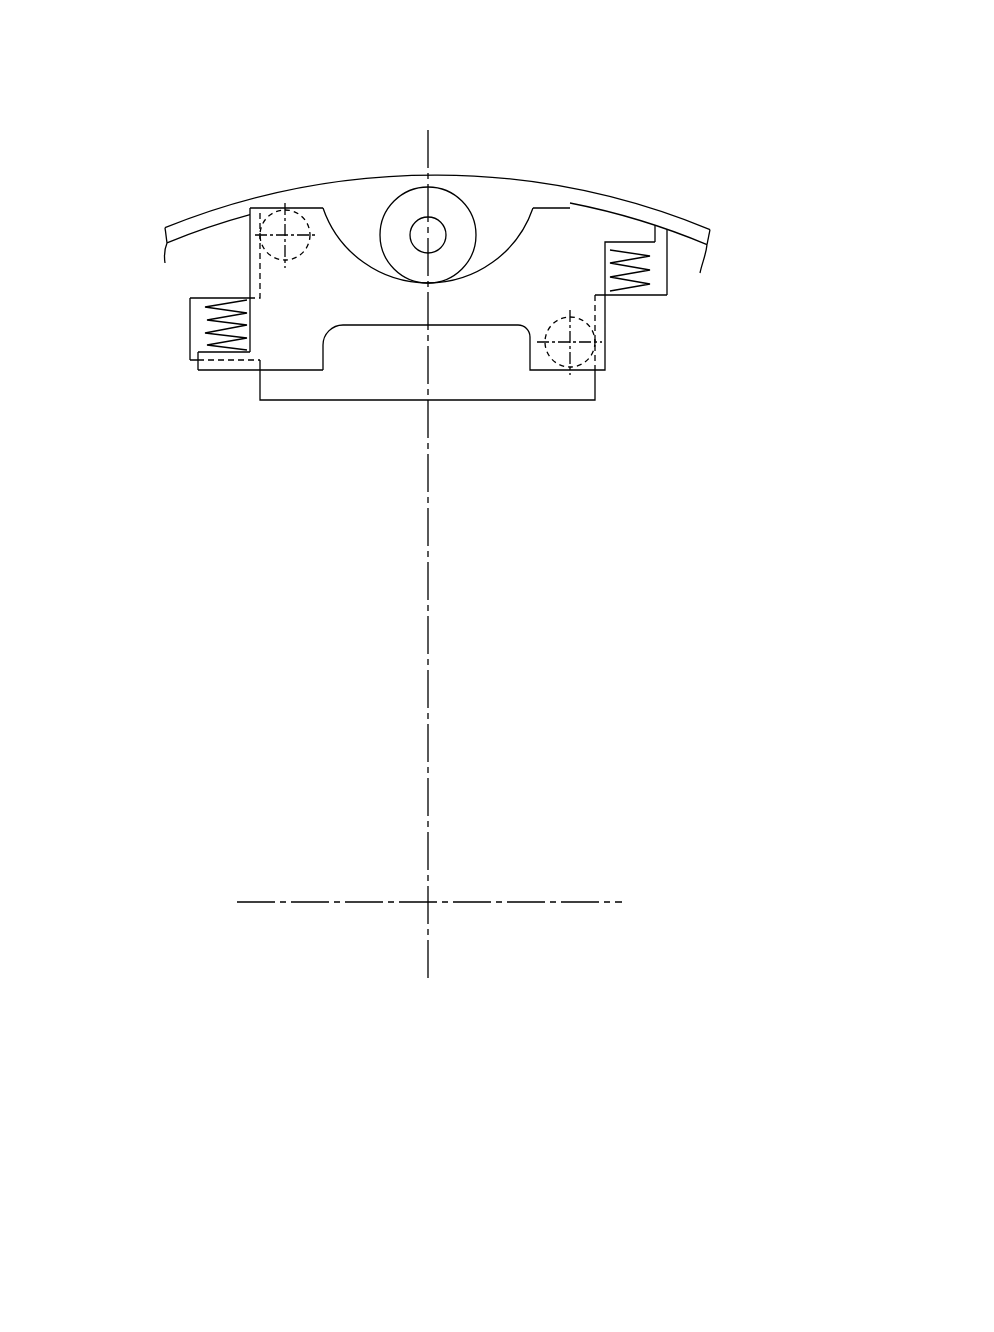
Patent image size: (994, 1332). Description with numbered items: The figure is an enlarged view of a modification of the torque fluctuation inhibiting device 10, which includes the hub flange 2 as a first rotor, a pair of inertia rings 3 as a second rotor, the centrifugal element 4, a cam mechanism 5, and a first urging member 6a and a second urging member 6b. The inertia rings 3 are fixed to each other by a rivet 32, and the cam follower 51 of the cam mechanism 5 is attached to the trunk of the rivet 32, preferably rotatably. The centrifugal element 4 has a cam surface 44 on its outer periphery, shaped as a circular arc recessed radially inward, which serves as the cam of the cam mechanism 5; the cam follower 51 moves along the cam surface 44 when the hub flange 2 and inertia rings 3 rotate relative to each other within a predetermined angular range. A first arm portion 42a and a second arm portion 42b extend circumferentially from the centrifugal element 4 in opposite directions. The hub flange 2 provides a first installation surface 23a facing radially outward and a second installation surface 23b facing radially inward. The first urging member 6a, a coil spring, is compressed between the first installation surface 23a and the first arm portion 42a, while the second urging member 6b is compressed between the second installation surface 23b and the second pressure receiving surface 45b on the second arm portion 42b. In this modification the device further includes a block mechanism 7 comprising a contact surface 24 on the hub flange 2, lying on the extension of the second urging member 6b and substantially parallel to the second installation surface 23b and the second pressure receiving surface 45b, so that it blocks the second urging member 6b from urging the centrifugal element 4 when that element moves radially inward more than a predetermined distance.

The torque fluctuation inhibiting device 10 is at (658, 103).
The hub flange 2 is at (690, 236).
The inertia ring 3 is at (523, 180).
The centrifugal element 4 is at (570, 205).
The cam mechanism 5 is at (373, 257).
The cam follower 51 is at (392, 203).
The rivet 32 is at (440, 228).
The cam surface 44 is at (515, 241).
The first arm portion 42a is at (632, 228).
The second arm portion 42b is at (213, 370).
The first installation surface 23a is at (660, 283).
The second installation surface 23b is at (190, 312).
The first urging member 6a is at (633, 287).
The second urging member 6b is at (205, 307).
The second pressure receiving surface 45b is at (198, 345).
The contact surface 24 is at (197, 355).
The block mechanism 7 is at (195, 372).